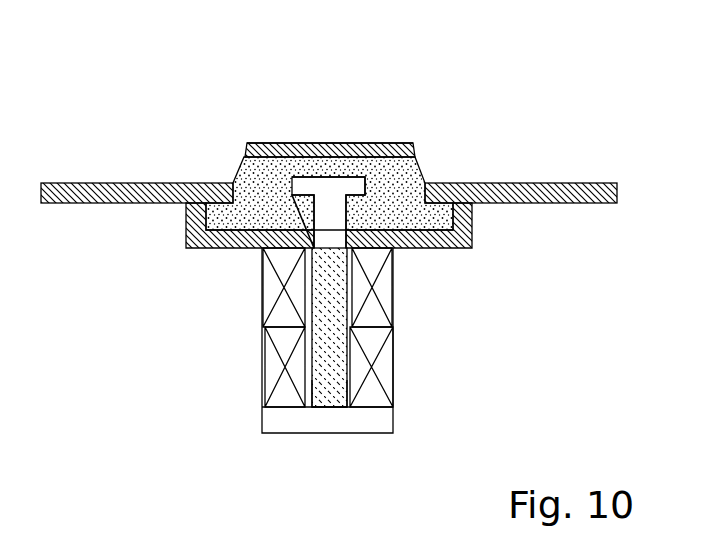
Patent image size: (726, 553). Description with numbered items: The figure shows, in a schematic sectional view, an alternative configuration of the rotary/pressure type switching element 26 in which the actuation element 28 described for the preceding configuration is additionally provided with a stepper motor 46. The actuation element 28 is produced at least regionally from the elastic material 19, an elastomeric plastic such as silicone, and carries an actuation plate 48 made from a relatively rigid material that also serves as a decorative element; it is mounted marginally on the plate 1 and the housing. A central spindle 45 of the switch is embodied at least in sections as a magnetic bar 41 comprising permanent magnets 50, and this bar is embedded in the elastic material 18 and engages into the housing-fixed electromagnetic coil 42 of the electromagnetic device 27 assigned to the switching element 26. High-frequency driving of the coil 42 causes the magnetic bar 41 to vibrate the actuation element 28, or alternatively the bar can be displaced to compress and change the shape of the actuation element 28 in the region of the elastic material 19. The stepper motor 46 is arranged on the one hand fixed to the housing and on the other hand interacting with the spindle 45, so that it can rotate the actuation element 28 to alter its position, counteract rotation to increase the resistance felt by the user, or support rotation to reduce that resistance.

The vehicle body panel / plate 1 is at (520, 203).
The switching element 26 is at (198, 152).
The actuation element 28 is at (308, 140).
The central spindle 45 is at (330, 186).
The actuation plate 48 is at (345, 146).
The elastic material 18 is at (400, 188).
The elastic material 19 is at (413, 215).
The permanent magnets 50 is at (313, 273).
The magnetic bar 41 is at (337, 393).
The electromagnetic device 27 is at (253, 310).
The electromagnetic coil 42 is at (377, 307).
The stepper motor 46 is at (267, 370).